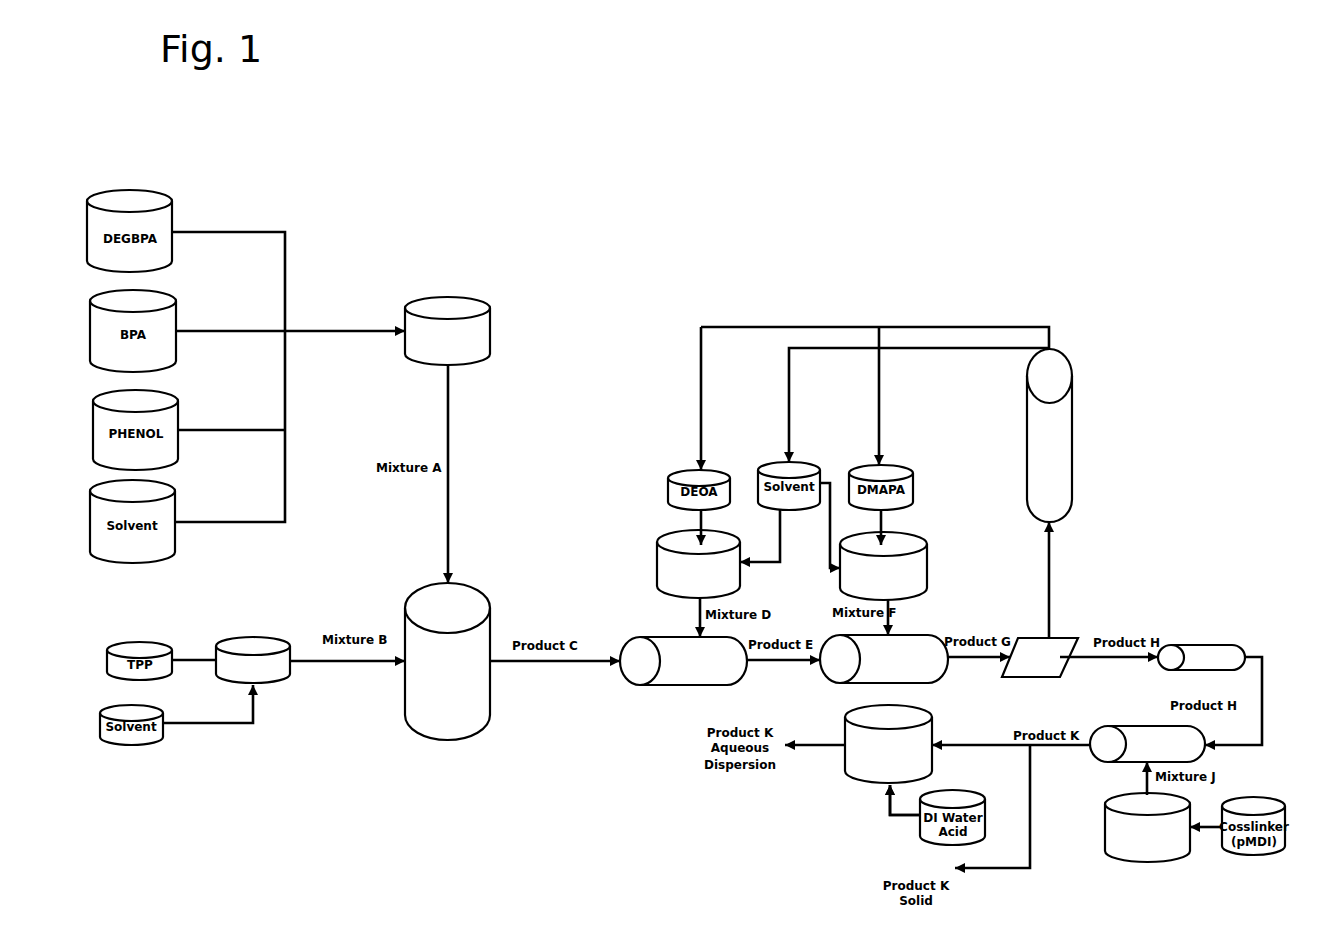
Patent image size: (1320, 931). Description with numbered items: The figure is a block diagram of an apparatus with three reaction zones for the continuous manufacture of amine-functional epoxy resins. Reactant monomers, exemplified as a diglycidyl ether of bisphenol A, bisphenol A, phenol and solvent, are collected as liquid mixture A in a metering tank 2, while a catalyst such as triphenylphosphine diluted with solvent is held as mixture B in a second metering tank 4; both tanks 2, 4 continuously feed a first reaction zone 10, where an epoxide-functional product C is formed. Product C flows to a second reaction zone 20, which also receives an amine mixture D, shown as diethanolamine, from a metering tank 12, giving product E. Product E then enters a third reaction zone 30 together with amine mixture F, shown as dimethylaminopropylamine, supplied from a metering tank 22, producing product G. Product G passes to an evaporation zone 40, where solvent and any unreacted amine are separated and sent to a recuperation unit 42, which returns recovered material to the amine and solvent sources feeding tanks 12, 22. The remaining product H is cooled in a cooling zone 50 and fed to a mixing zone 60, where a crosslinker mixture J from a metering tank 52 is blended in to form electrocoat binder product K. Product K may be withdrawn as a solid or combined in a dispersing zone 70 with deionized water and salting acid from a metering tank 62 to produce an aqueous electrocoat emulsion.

The metering tank 2 is at (470, 297).
The metering tank 4 is at (262, 636).
The first reaction zone 10 is at (490, 592).
The metering tank 12 is at (655, 548).
The second reaction zone 20 is at (637, 686).
The metering tank 22 is at (900, 530).
The third reaction zone 30 is at (920, 633).
The evaporation zone 40 is at (1077, 638).
The recuperation unit 42 is at (1072, 408).
The cooling zone 50 is at (1232, 645).
The metering tank 52 is at (1103, 845).
The mixing zone 60 is at (1158, 726).
The metering tank 62 is at (920, 830).
The dispersing zone 70 is at (845, 765).